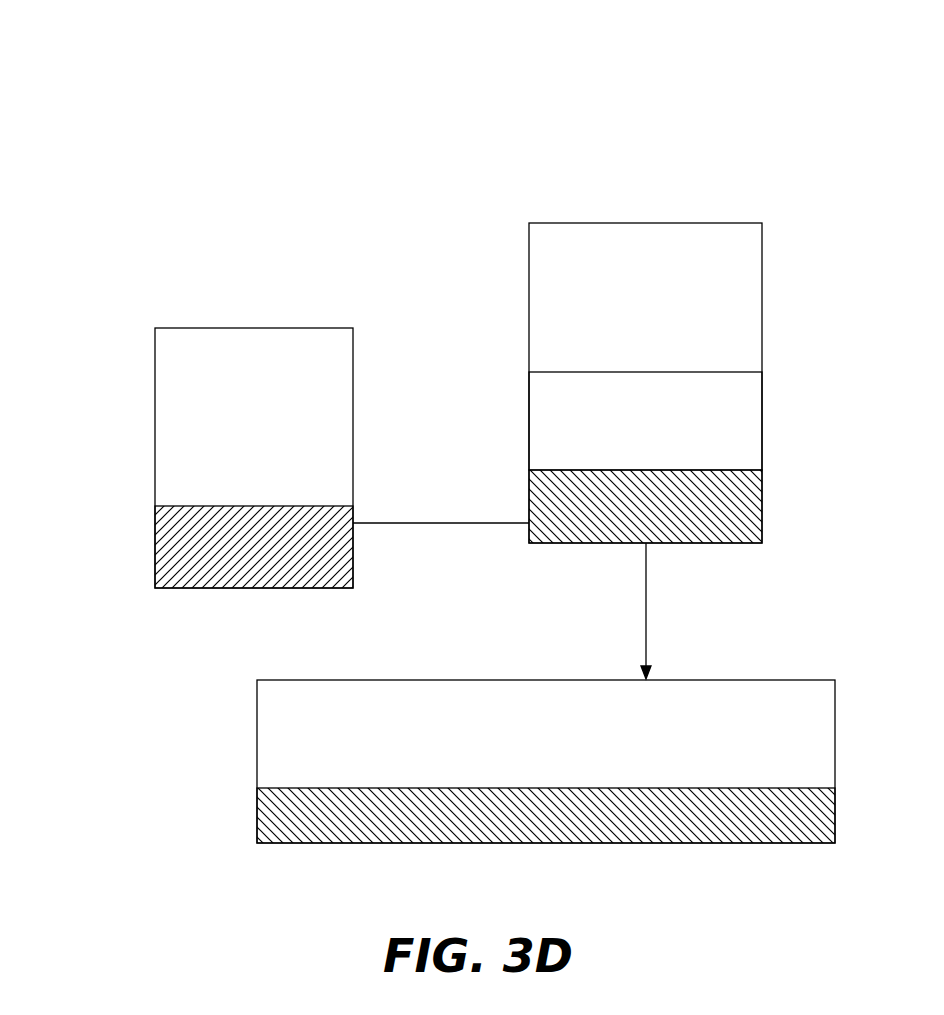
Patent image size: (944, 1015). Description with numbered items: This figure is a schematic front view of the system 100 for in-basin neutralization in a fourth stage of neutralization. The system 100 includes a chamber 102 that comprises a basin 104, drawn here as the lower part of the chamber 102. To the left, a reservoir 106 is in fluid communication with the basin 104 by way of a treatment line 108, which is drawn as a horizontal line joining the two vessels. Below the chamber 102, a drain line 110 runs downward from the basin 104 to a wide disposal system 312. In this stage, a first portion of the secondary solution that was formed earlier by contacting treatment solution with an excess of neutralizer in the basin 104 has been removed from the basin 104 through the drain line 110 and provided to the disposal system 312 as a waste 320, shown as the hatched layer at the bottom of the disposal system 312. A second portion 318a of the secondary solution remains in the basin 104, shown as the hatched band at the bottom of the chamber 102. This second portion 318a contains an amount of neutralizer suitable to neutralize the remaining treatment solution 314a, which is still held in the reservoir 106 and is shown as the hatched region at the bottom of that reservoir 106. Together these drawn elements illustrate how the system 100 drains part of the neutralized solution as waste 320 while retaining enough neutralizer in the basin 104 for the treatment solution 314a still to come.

The system for in-basin neutralization 100 is at (356, 108).
The chamber 102 is at (597, 223).
The basin 104 is at (762, 430).
The reservoir 106 is at (247, 328).
The treatment line 108 is at (443, 523).
The drain line 110 is at (646, 601).
The disposal system 312 is at (257, 742).
The remaining treatment solution 314a is at (155, 472).
The second portion of the secondary solution 318a is at (762, 510).
The waste 320 is at (257, 820).